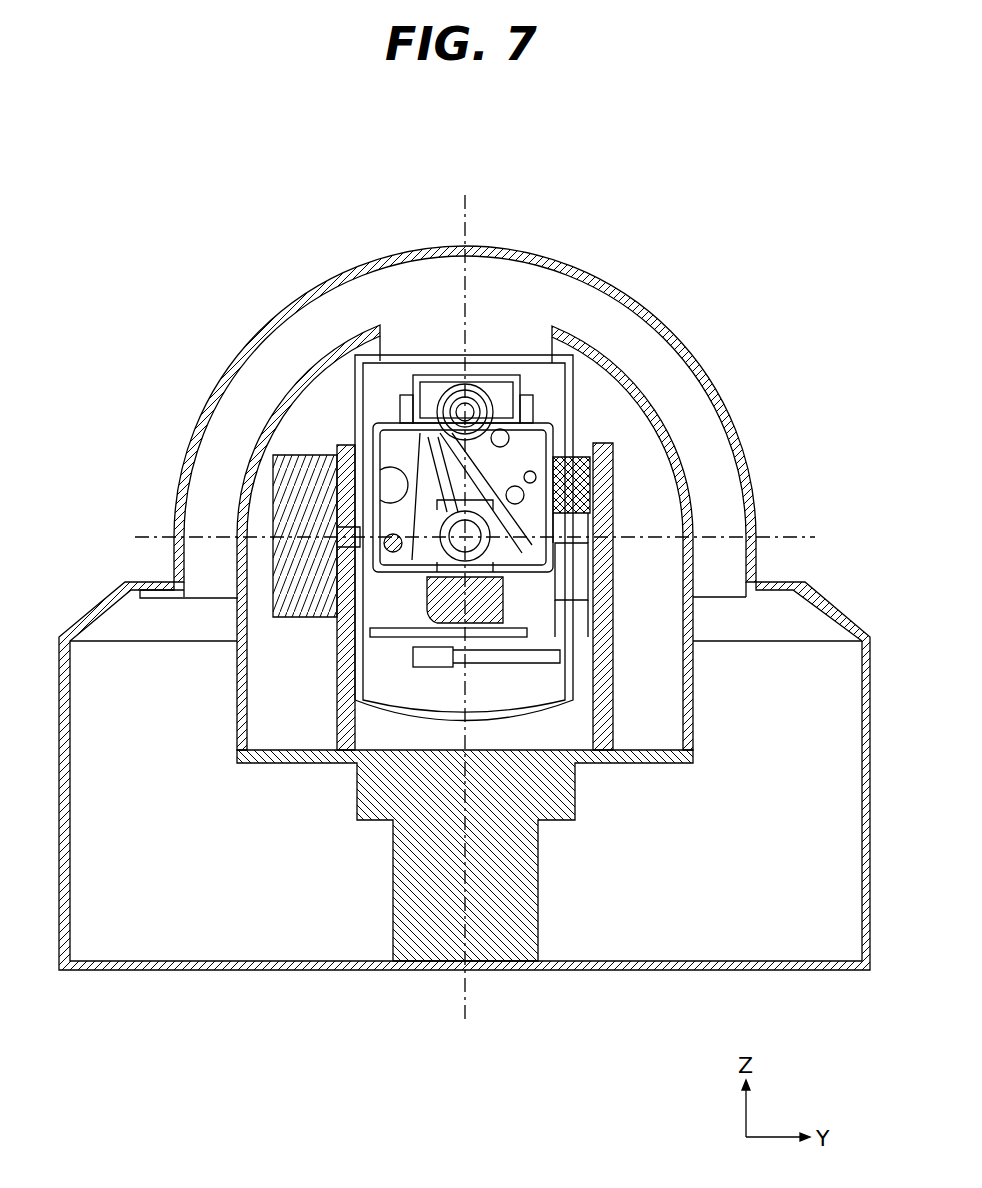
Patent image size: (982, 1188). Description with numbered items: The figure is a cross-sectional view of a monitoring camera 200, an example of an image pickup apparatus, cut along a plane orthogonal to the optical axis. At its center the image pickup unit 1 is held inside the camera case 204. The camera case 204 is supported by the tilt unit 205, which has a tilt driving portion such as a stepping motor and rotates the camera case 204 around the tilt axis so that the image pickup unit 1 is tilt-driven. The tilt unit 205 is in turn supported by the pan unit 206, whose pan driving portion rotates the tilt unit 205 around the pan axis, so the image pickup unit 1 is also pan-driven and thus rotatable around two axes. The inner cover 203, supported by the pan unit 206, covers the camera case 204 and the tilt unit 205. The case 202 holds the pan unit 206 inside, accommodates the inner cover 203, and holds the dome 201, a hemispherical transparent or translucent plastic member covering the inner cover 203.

The monitoring camera 200 is at (596, 141).
The image pickup unit 1 is at (408, 373).
The dome 201 is at (283, 310).
The case 202 is at (91, 611).
The inner cover 203 is at (636, 386).
The camera case 204 is at (563, 712).
The tilt unit 205 is at (337, 700).
The pan unit 206 is at (393, 890).